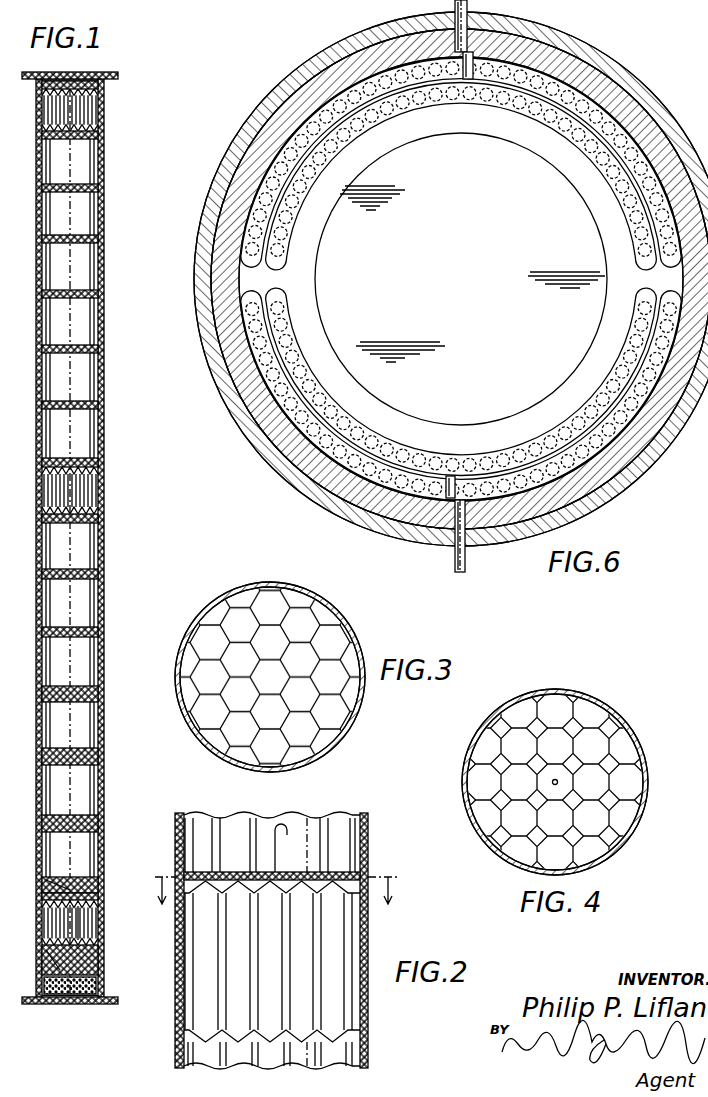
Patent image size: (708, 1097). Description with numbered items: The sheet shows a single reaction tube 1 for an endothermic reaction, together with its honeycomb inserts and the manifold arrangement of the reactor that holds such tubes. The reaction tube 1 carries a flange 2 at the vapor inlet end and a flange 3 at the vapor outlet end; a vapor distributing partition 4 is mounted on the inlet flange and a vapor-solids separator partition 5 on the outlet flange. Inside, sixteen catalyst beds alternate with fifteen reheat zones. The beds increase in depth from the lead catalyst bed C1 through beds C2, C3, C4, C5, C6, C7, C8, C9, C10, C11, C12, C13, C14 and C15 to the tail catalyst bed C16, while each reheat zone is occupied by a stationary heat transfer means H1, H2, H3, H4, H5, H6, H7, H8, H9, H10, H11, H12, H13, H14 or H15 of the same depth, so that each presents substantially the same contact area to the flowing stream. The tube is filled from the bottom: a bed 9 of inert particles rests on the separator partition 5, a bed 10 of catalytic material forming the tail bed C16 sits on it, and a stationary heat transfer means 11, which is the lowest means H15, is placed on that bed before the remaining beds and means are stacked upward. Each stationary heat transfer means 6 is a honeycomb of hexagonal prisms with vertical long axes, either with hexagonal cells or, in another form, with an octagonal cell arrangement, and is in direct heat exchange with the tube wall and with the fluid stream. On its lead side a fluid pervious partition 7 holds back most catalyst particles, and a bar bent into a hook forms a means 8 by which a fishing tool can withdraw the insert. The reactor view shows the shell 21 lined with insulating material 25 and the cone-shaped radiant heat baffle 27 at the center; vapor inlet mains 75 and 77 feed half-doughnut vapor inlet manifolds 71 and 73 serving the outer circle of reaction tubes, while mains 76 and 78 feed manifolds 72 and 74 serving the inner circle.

In FIG. 1, the reaction tube 1 is at (104, 392).
In FIG. 3, the reaction tube 1 is at (363, 652).
In FIG. 4, the reaction tube 1 is at (648, 780).
In FIG. 2, the reaction tube 1 is at (369, 847).
In FIG. 1, the flange 2 is at (115, 76).
In FIG. 1, the flange 3 is at (110, 1000).
In FIG. 2, the flange 3 is at (275, 905).
In FIG. 1, the vapor distributing partition 4 is at (100, 73).
In FIG. 1, the vapor-solids separator partition 5 is at (95, 1004).
In FIG. 3, the stationary heat transfer means 6 is at (330, 630).
In FIG. 4, the stationary heat transfer means 6 is at (612, 788).
In FIG. 2, the stationary heat transfer means 6 is at (347, 945).
In FIG. 1, the fluid pervious partition 7 is at (104, 897).
In FIG. 2, the fluid pervious partition 7 is at (304, 874).
In FIG. 1, the removing means 8 is at (46, 885).
In FIG. 4, the removing means 8 is at (552, 783).
In FIG. 2, the removing means 8 is at (283, 822).
In FIG. 1, the bed of inert particles 9 is at (100, 983).
In FIG. 1, the bed of catalytic material 10 is at (46, 962).
In FIG. 1, the stationary heat transfer means 11 is at (85, 925).
In FIG. 6, the shell 21 is at (332, 508).
In FIG. 6, the insulating material 25 is at (515, 525).
In FIG. 6, the radiant heat baffle 27 is at (466, 309).
In FIG. 6, the vapor inlet manifold 71 is at (246, 293).
In FIG. 6, the vapor inlet manifold 72 is at (274, 292).
In FIG. 6, the vapor inlet manifold 73 is at (236, 277).
In FIG. 6, the vapor inlet manifold 74 is at (272, 266).
In FIG. 6, the vapor inlet main 75 is at (456, 540).
In FIG. 6, the vapor inlet main 76 is at (447, 490).
In FIG. 6, the vapor inlet main 77 is at (470, 24).
In FIG. 6, the vapor inlet main 78 is at (464, 68).
In FIG. 1, the stationary heat transfer means H1 is at (38, 122).
In FIG. 1, the stationary heat transfer means H2 is at (38, 167).
In FIG. 1, the stationary heat transfer means H3 is at (38, 217).
In FIG. 1, the stationary heat transfer means H4 is at (38, 270).
In FIG. 1, the stationary heat transfer means H5 is at (38, 328).
In FIG. 1, the stationary heat transfer means H6 is at (38, 382).
In FIG. 1, the stationary heat transfer means H7 is at (38, 438).
In FIG. 1, the stationary heat transfer means H8 is at (38, 495).
In FIG. 1, the stationary heat transfer means H9 is at (38, 553).
In FIG. 1, the stationary heat transfer means H10 is at (38, 608).
In FIG. 1, the stationary heat transfer means H11 is at (38, 667).
In FIG. 1, the stationary heat transfer means H12 is at (38, 732).
In FIG. 1, the stationary heat transfer means H13 is at (38, 795).
In FIG. 1, the stationary heat transfer means H14 is at (38, 860).
In FIG. 1, the stationary heat transfer means H15 is at (38, 928).
In FIG. 1, the lead catalyst bed C1 is at (104, 85).
In FIG. 1, the catalyst bed C2 is at (104, 135).
In FIG. 1, the catalyst bed C3 is at (104, 188).
In FIG. 1, the catalyst bed C4 is at (104, 239).
In FIG. 1, the catalyst bed C5 is at (104, 294).
In FIG. 1, the catalyst bed C6 is at (104, 349).
In FIG. 1, the catalyst bed C7 is at (104, 405).
In FIG. 1, the catalyst bed C8 is at (104, 462).
In FIG. 1, the catalyst bed C9 is at (104, 518).
In FIG. 1, the catalyst bed C10 is at (104, 574).
In FIG. 1, the catalyst bed C11 is at (104, 632).
In FIG. 1, the catalyst bed C12 is at (104, 692).
In FIG. 1, the catalyst bed C13 is at (104, 756).
In FIG. 1, the catalyst bed C14 is at (104, 823).
In FIG. 1, the catalyst bed C15 is at (104, 885).
In FIG. 1, the tail catalyst bed C16 is at (104, 960).